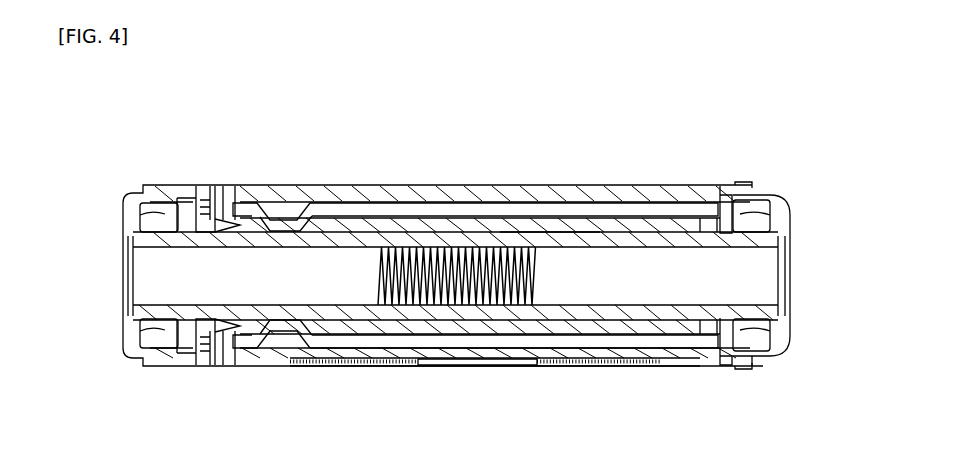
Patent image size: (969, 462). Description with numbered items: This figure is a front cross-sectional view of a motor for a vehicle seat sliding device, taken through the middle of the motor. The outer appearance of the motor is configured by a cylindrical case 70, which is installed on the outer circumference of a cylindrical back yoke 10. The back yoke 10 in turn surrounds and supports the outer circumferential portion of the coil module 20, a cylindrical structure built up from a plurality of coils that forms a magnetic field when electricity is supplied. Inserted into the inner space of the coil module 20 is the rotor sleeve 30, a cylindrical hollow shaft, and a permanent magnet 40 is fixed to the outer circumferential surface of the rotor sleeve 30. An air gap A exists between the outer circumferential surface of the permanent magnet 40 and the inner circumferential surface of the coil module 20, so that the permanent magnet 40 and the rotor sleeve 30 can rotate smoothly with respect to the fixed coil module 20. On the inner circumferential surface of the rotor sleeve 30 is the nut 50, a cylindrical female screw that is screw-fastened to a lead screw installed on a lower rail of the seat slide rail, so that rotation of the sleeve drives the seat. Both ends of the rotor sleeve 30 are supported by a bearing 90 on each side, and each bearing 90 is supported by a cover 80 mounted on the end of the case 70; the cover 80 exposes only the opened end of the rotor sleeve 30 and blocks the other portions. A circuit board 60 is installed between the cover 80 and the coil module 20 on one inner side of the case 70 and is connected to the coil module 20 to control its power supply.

The back yoke 10 is at (410, 185).
The coil module 20 is at (478, 205).
The rotor sleeve 30 is at (604, 236).
The permanent magnet 40 is at (642, 230).
The air gap A is at (546, 232).
The nut 50 is at (535, 270).
The circuit board 60 is at (200, 185).
The case 70 is at (697, 366).
The cover 80 is at (132, 344).
The bearing 90 is at (157, 333).